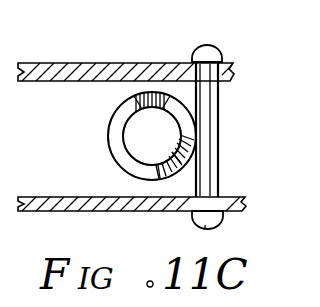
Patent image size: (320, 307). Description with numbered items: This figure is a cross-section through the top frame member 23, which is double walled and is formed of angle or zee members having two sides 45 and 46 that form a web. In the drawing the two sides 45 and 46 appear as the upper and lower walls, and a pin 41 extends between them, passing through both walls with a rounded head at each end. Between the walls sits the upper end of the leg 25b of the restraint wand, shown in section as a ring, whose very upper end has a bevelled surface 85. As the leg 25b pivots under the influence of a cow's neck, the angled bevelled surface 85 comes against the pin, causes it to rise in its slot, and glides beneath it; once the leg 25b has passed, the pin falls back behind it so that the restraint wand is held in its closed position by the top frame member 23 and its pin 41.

The side 46 is at (108, 63).
The side 45 is at (101, 212).
The leg 25b is at (112, 132).
The bevelled surface 85 is at (117, 146).
The pin 41 is at (246, 114).
The top frame member 23 is at (242, 83).